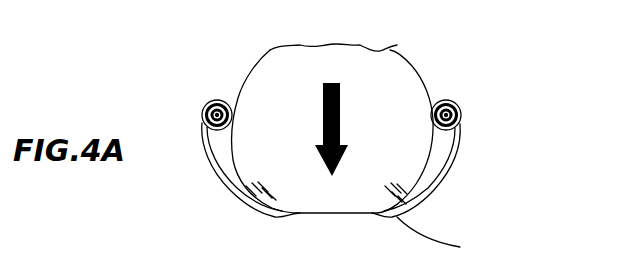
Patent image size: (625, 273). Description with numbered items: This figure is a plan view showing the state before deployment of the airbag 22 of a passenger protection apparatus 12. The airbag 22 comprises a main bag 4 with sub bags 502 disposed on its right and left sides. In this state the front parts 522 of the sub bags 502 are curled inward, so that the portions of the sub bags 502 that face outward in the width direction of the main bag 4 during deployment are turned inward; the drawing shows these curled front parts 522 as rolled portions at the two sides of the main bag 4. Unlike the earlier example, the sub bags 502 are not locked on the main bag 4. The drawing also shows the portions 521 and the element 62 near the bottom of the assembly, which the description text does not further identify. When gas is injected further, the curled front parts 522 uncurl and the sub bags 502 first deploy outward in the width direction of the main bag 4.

The passenger protection apparatus 12 is at (228, 71).
The main bag 4 is at (397, 57).
The airbag 22 is at (406, 166).
The sub bags 502 is at (468, 167).
The front parts 522 is at (462, 118).
The first strap 521 is at (415, 206).
The band 62 is at (460, 247).